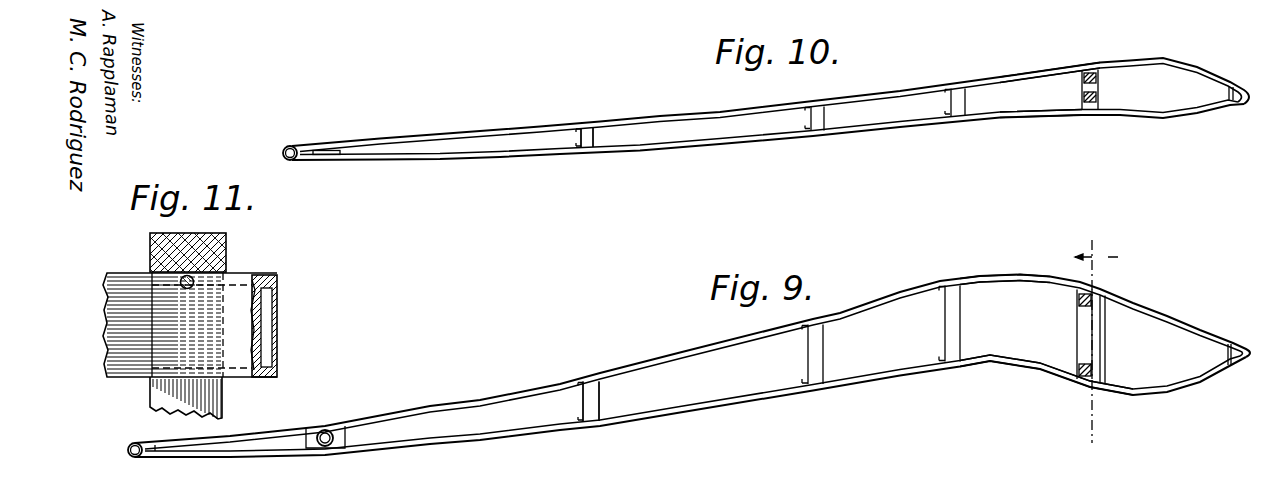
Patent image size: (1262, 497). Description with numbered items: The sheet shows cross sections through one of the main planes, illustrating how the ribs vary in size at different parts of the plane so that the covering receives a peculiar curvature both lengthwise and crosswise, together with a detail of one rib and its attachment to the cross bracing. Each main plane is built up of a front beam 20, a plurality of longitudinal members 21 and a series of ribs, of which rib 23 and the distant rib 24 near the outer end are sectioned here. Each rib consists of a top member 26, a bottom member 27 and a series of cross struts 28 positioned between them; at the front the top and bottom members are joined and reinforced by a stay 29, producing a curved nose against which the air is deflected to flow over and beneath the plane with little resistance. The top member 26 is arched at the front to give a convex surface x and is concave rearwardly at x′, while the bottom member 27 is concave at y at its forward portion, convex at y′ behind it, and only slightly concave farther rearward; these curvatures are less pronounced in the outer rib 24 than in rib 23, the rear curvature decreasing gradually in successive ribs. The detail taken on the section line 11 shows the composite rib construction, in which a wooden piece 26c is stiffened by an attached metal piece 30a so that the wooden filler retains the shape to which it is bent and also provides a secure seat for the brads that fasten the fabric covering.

In FIG. 9, the front beam 20 is at (1124, 340).
In FIG. 10, the longitudinal member 21 is at (298, 146).
In FIG. 9, the longitudinal member 21 is at (135, 457).
In FIG. 9, the rib 23 is at (881, 319).
In FIG. 10, the rib 24 is at (870, 95).
In FIG. 10, the top member 26 is at (1024, 78).
In FIG. 9, the top member 26 is at (1010, 277).
In FIG. 11, the wooden piece 26c is at (230, 250).
In FIG. 10, the bottom member 27 is at (1027, 117).
In FIG. 9, the bottom member 27 is at (995, 363).
In FIG. 10, the cross strut 28 is at (960, 102).
In FIG. 9, the cross strut 28 is at (1077, 328).
In FIG. 10, the stay 29 is at (1228, 92).
In FIG. 9, the stay 29 is at (1229, 353).
In FIG. 11, the metal piece 30a is at (278, 315).
In FIG. 9, the section line 11 is at (1096, 334).
In FIG. 10, the convex top surface x is at (1165, 60).
In FIG. 9, the convex top surface x is at (1124, 292).
In FIG. 10, the concave top surface x′ is at (679, 114).
In FIG. 9, the concave top surface x′ is at (484, 398).
In FIG. 10, the concave bottom surface y is at (1180, 116).
In FIG. 9, the concave bottom surface y is at (1170, 397).
In FIG. 10, the convex bottom surface y′ is at (1097, 112).
In FIG. 9, the convex bottom surface y′ is at (1042, 372).